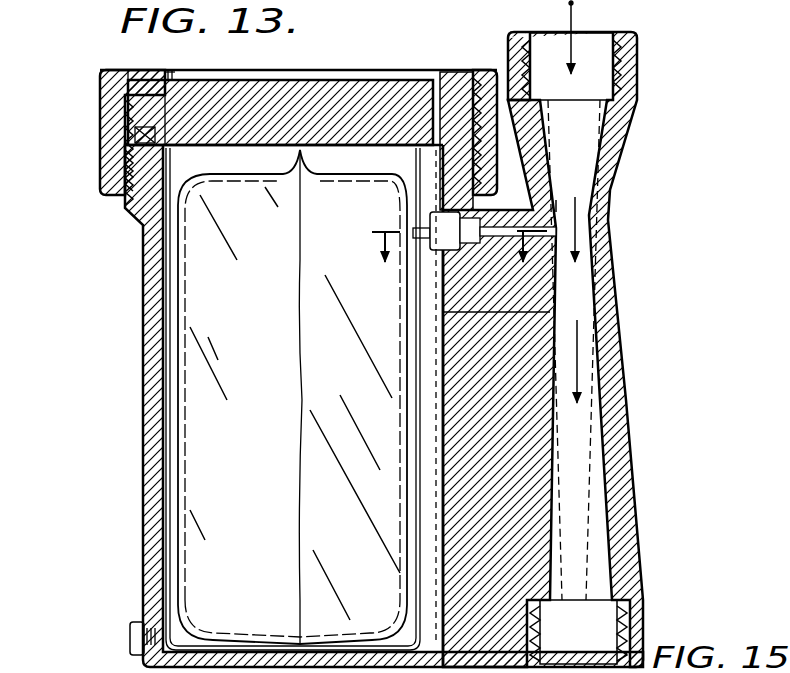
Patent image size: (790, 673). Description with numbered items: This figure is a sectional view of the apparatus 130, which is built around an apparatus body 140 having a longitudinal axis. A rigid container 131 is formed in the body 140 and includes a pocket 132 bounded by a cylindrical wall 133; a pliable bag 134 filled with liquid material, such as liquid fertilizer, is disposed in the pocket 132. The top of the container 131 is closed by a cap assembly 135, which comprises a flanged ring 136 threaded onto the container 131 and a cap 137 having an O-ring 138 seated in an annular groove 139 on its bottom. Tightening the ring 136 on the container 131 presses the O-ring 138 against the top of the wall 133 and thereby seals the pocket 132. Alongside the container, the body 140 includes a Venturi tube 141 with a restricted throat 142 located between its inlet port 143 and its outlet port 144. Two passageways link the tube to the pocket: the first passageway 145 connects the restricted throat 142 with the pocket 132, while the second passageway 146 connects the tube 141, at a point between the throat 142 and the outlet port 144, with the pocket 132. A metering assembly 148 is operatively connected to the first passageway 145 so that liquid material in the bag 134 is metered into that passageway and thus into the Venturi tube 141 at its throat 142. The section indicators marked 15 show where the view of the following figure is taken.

The apparatus 130 is at (635, 349).
The rigid container 131 is at (143, 340).
The pocket 132 is at (425, 179).
The cylindrical wall 133 is at (164, 522).
The pliable bag 134 is at (265, 593).
The cap assembly 135 is at (86, 171).
The flanged ring 136 is at (163, 76).
The cap 137 is at (280, 97).
The O-ring 138 is at (479, 72).
The annular groove 139 is at (100, 108).
The apparatus body 140 is at (512, 560).
The Venturi tube 141 is at (622, 303).
The restricted throat 142 is at (598, 226).
The inlet port 143 is at (597, 44).
The outlet port 144 is at (607, 622).
The first passageway 145 is at (518, 200).
The second passageway 146 is at (515, 312).
The metering assembly 148 is at (433, 207).
The section line 15- 15 is at (457, 267).